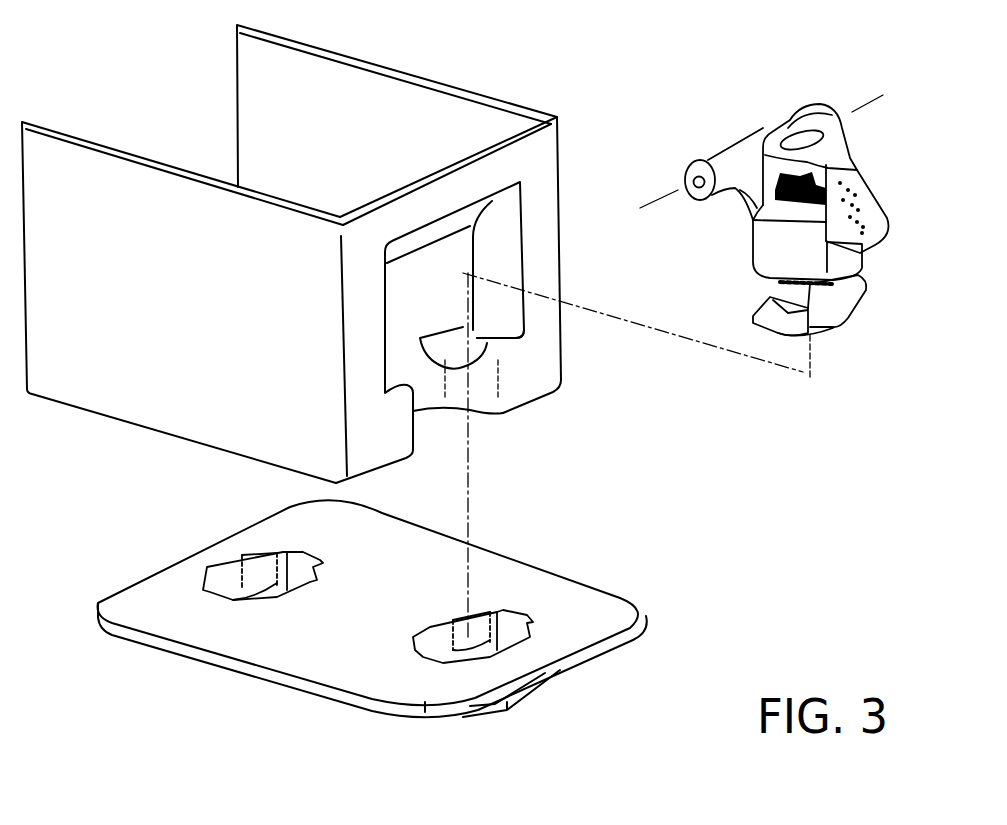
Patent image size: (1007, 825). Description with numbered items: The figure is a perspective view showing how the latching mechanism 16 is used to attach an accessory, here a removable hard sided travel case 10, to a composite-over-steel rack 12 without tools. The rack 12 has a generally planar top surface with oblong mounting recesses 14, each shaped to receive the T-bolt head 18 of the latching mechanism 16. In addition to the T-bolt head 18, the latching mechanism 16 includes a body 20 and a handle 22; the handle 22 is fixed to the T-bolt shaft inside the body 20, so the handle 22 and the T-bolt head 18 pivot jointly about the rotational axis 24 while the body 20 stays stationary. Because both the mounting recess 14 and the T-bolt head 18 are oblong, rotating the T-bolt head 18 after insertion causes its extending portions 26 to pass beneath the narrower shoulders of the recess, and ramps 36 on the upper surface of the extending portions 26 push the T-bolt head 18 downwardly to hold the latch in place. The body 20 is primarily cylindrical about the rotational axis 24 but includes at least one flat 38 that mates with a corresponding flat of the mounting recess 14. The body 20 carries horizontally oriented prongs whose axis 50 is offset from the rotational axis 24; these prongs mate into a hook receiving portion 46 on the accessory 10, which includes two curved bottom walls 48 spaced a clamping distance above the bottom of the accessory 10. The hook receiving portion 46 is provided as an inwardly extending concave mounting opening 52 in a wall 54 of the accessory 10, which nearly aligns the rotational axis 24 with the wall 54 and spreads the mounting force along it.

The removable hard sided travel case 10 is at (397, 127).
The composite-over-steel rack 12 is at (302, 635).
The mounting recesses 14 is at (227, 577).
The latching mechanism 16 is at (738, 142).
The T-bolt head 18 is at (823, 322).
The body 20 is at (758, 250).
The handle 22 is at (860, 185).
The rotational axis 24 is at (468, 497).
The extending portions 26 is at (755, 315).
The ramps 36 is at (787, 310).
The flat 38 is at (852, 257).
The hook receiving portion 46 is at (413, 293).
The curved bottom walls 48 is at (428, 340).
The axis for the prongs 50 is at (870, 102).
The inwardly extending concave mounting opening 52 is at (498, 228).
The wall 54 is at (546, 358).